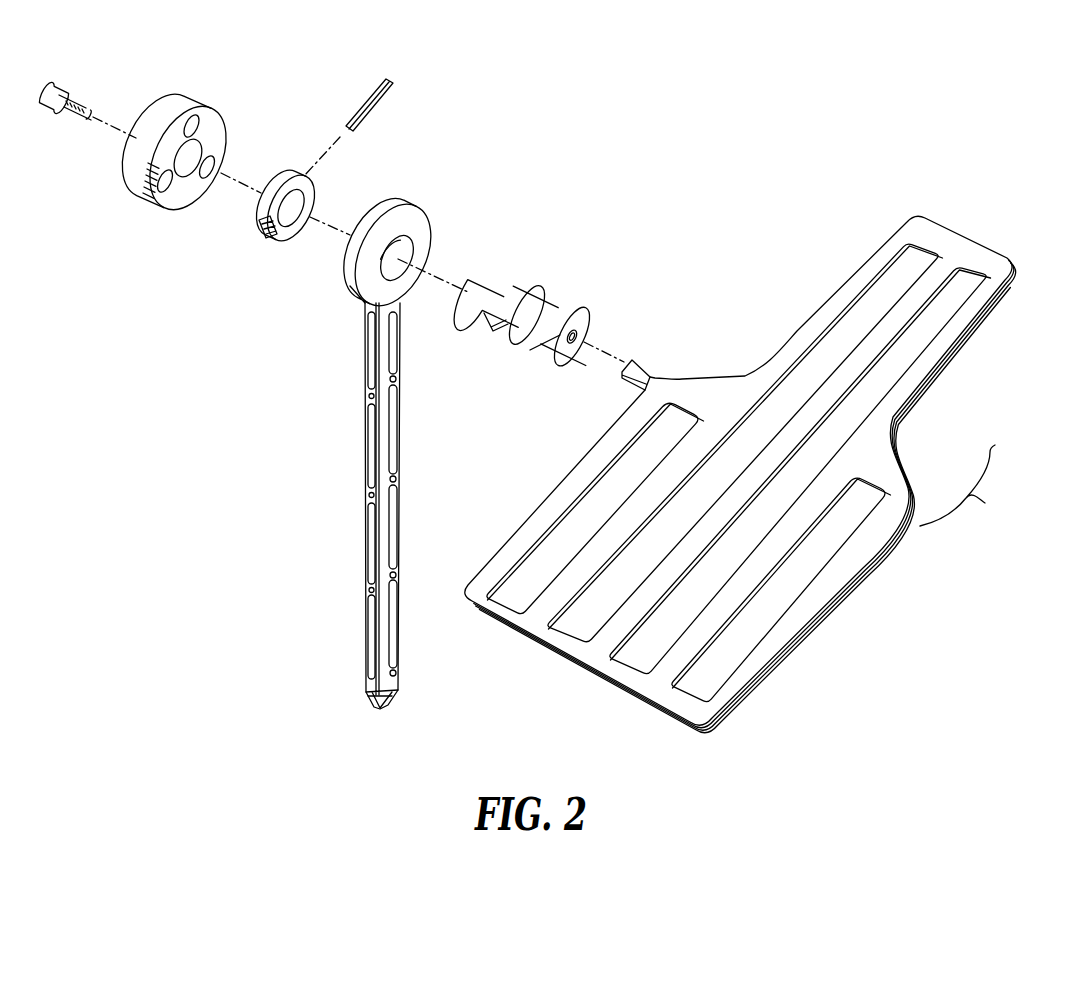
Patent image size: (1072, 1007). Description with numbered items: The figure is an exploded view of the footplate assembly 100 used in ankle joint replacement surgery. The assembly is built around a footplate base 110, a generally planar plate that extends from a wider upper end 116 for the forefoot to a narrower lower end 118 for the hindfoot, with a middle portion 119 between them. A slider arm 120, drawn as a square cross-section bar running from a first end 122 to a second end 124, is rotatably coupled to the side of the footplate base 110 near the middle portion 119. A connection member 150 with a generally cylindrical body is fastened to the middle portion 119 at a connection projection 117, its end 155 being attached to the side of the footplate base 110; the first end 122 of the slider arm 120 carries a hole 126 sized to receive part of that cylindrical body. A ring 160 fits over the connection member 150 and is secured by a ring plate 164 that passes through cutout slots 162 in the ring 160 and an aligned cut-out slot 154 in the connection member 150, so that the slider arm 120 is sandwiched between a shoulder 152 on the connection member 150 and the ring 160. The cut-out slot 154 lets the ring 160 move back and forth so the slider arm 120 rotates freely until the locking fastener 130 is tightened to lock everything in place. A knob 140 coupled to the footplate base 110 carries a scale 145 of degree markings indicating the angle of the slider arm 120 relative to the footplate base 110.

The footplate assembly 100 is at (148, 586).
The footplate base 110 is at (749, 464).
The upper end 116 is at (576, 680).
The connection projection 117 is at (640, 365).
The lower end 118 is at (942, 222).
The middle portion 119 is at (985, 504).
The slider arm 120 is at (366, 499).
The first end 122 is at (389, 458).
The second end 124 is at (388, 712).
The hole 126 is at (400, 258).
The locking fastener 130 is at (80, 97).
The knob 140 is at (193, 103).
The scale 145 is at (140, 195).
The connection member 150 is at (563, 303).
The shoulder 152 is at (517, 334).
The cut-out slot 154 is at (492, 325).
The end 155 is at (577, 347).
The ring 160 is at (313, 192).
The cutout slots 162 is at (262, 236).
The ring plate 164 is at (364, 102).